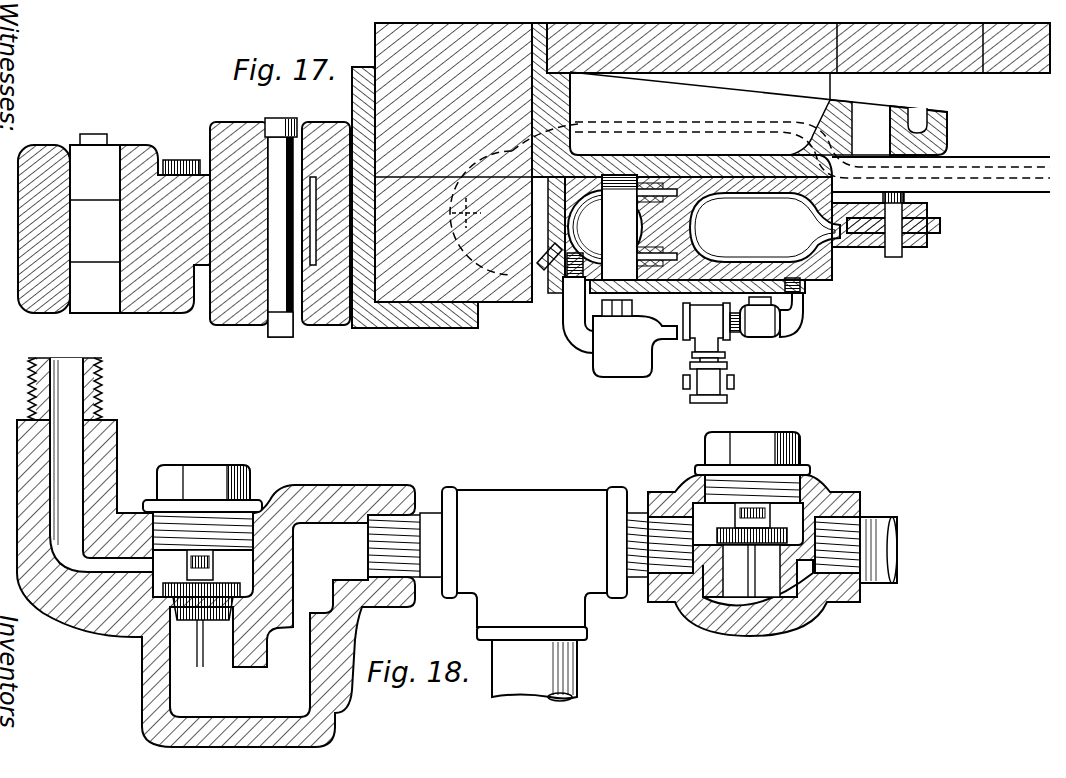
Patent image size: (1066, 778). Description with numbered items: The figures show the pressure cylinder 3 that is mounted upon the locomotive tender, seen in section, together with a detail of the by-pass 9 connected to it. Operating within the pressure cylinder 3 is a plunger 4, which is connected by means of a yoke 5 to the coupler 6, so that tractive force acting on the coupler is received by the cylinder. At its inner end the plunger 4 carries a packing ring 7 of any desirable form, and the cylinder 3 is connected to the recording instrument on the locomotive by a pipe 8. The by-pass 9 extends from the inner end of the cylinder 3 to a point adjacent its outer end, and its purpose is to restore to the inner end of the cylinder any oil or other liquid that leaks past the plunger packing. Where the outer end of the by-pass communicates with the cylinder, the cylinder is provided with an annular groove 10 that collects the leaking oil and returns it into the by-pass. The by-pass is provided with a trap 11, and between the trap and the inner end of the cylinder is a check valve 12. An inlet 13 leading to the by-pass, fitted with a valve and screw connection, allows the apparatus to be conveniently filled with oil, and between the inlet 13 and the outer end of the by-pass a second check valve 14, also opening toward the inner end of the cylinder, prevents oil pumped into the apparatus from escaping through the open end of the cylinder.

In FIG. 17, the pressure cylinder 3 is at (555, 221).
In FIG. 17, the plunger 4 is at (650, 222).
In FIG. 17, the yoke 5 is at (930, 220).
In FIG. 17, the coupler 6 is at (34, 160).
In FIG. 17, the packing ring 7 is at (619, 227).
In FIG. 17, the pipe 8 is at (467, 195).
In FIG. 17, the by-pass 9 is at (665, 322).
In FIG. 17, the annular groove 10 is at (818, 282).
In FIG. 18, the trap 11 is at (147, 680).
In FIG. 18, the check valve 12 is at (221, 592).
In FIG. 17, the inlet 13 is at (710, 355).
In FIG. 18, the inlet 13 is at (560, 663).
In FIG. 18, the second check valve 14 is at (770, 537).